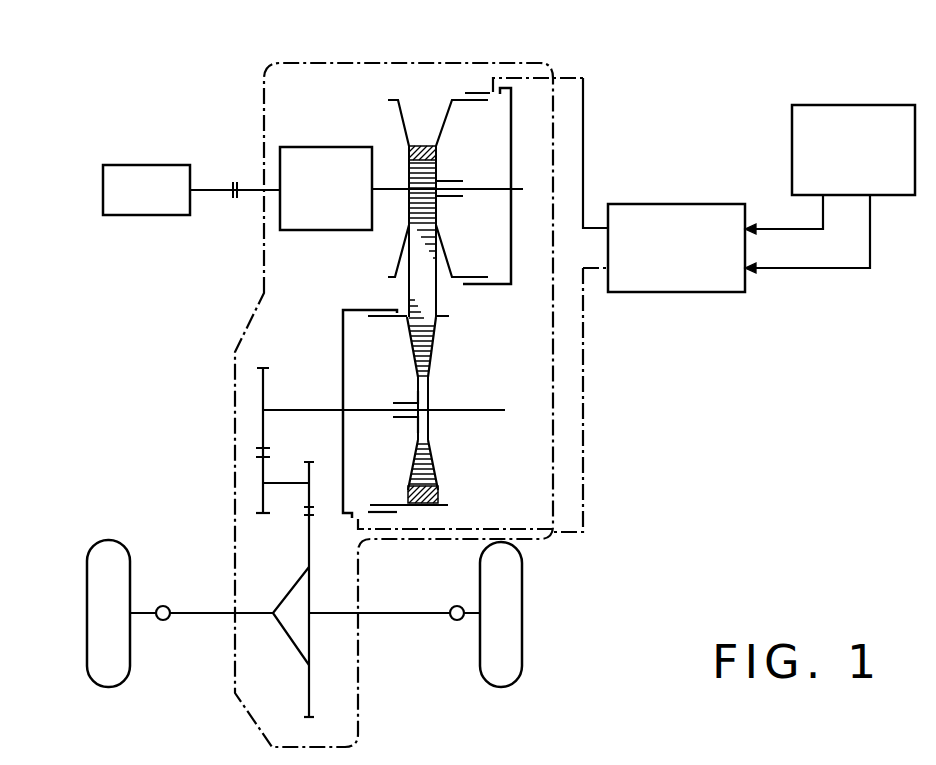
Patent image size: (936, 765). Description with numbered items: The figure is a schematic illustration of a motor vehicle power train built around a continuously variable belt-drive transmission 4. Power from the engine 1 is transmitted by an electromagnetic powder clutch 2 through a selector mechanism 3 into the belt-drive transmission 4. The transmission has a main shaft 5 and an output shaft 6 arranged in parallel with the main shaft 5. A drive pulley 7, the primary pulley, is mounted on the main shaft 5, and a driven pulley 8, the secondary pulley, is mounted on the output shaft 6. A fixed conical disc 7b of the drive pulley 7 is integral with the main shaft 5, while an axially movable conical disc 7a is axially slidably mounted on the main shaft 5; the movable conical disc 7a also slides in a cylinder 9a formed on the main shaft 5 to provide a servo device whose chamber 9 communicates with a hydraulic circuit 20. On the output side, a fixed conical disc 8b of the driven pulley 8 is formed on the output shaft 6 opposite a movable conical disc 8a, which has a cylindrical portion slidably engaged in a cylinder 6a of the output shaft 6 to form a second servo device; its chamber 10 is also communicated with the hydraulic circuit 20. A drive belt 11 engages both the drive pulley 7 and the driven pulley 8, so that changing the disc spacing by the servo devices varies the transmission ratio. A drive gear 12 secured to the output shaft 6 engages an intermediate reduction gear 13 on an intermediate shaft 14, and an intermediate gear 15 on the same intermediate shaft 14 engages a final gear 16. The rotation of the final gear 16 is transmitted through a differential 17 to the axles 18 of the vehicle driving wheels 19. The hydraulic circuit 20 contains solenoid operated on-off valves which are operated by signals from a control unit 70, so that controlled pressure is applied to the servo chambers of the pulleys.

The engine 1 is at (153, 165).
The electromagnetic powder clutch 2 is at (235, 181).
The selector mechanism 3 is at (326, 147).
The continuously variable belt-drive transmission 4 is at (431, 98).
The main shaft 5 is at (385, 191).
The output shaft 6 is at (305, 408).
The cylinder of the output shaft 6a is at (376, 310).
The drive pulley 7 is at (429, 162).
The movable conical disc 7a is at (455, 98).
The fixed conical disc 7b is at (406, 125).
The driven pulley 8 is at (433, 402).
The movable conical disc 8a is at (408, 327).
The fixed conical disc 8b is at (433, 352).
The chamber 9 is at (495, 148).
The cylinder 9a is at (493, 285).
The chamber 10 is at (355, 343).
The drive belt 11 is at (425, 504).
The drive gear 12 is at (265, 366).
The intermediate reduction gear 13 is at (267, 515).
The intermediate shaft 14 is at (287, 483).
The intermediate gear 15 is at (309, 462).
The final gear 16 is at (311, 718).
The differential 17 is at (297, 597).
The axles 18 is at (149, 617).
The vehicle driving wheels 19 is at (122, 573).
The hydraulic circuit 20 is at (670, 293).
The control unit 70 is at (831, 104).